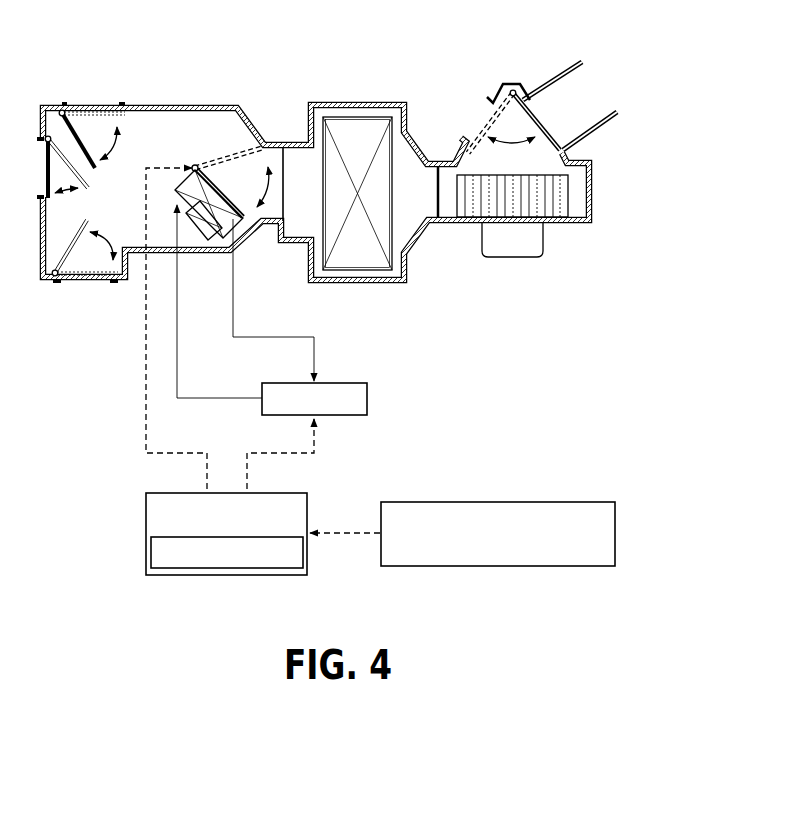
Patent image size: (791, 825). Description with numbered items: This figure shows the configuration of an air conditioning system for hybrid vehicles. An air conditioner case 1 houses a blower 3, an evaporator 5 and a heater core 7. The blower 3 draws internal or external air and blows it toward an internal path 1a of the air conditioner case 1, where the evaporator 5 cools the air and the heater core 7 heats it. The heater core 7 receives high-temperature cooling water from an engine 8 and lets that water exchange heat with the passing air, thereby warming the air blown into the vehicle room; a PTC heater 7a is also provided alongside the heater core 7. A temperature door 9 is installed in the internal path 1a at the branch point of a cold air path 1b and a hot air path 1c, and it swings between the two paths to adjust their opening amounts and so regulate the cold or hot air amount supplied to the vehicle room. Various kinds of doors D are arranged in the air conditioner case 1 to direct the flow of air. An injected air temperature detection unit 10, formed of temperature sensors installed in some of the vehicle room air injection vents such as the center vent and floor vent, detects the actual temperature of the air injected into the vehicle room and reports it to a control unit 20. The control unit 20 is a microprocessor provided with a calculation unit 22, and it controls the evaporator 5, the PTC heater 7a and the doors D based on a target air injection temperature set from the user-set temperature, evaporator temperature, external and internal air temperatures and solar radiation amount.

The air conditioner case 1 is at (175, 100).
The internal path 1a is at (427, 199).
The cold air path 1b is at (218, 150).
The hot air path 1c is at (260, 165).
The blower 3 is at (515, 250).
The evaporator 5 is at (357, 117).
The heater core 7 is at (250, 240).
The PTC heater 7a is at (201, 243).
The engine 8 is at (367, 398).
The temperature door 9 is at (240, 197).
The injected air temperature detection unit 10 is at (615, 533).
The control unit 20 is at (307, 497).
The calculation unit 22 is at (303, 565).
The doors D is at (82, 142).